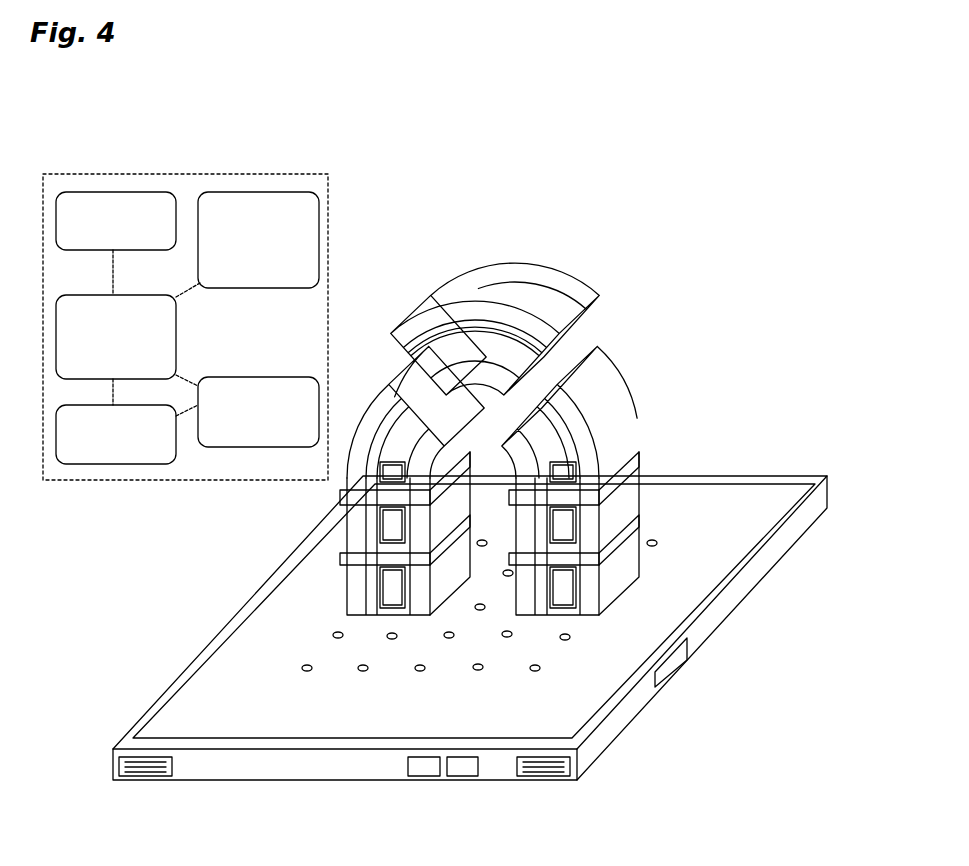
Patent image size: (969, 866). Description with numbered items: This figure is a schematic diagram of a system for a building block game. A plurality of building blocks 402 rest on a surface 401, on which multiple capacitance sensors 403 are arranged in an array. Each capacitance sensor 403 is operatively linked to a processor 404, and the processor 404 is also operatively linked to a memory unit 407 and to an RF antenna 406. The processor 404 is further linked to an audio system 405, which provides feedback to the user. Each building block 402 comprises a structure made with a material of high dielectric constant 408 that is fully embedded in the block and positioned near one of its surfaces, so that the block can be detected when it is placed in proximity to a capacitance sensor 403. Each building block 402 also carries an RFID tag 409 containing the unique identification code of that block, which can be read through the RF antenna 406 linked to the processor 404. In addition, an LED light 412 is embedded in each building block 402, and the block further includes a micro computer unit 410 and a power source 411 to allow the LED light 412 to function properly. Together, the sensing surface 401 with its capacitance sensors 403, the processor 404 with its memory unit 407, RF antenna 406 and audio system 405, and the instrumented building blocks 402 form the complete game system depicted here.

The surface 401 is at (827, 476).
The building block 402 is at (440, 312).
The capacitance sensor 403 is at (540, 668).
The processor 404 is at (422, 770).
The audio system 405 is at (132, 772).
The RF antenna 406 is at (675, 660).
The memory unit 407 is at (466, 776).
The material of high dielectric constant 408 is at (320, 265).
The RFID tag 409 is at (170, 192).
The micro computer unit 410 is at (177, 337).
The power source 411 is at (270, 377).
The LED light 412 is at (172, 464).